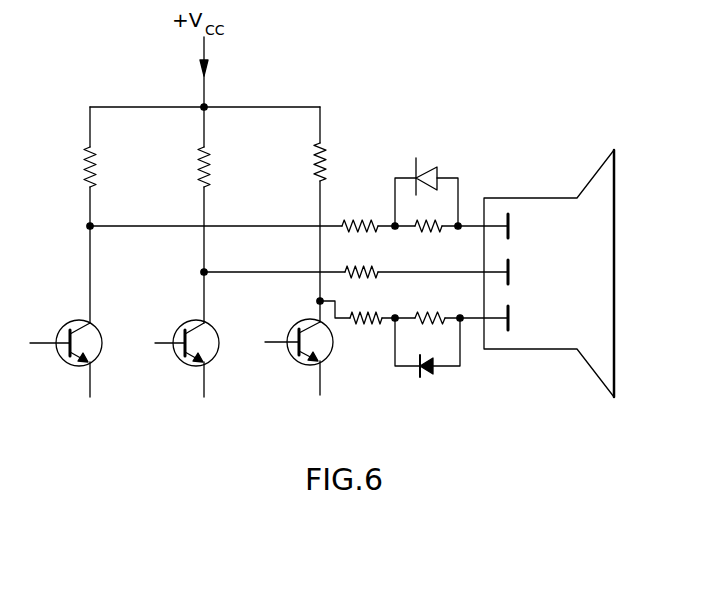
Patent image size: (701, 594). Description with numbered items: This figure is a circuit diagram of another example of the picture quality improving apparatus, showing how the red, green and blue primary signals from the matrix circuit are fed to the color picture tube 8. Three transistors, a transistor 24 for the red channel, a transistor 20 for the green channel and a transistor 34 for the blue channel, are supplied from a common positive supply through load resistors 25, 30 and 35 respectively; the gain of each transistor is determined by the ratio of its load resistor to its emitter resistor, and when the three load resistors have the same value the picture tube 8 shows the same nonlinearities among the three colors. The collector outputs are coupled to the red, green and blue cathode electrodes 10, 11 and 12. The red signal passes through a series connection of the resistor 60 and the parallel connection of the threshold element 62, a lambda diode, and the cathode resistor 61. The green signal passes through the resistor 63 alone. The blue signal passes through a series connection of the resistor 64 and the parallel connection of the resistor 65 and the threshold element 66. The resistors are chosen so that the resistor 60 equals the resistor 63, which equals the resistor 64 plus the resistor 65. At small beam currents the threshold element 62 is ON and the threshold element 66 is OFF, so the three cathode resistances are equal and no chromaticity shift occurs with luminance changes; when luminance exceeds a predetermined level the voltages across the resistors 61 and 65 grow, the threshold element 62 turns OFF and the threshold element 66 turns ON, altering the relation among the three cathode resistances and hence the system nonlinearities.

The color picture tube 8 is at (578, 194).
The cathode electrode 10 is at (510, 230).
The cathode electrode 11 is at (510, 276).
The cathode electrode 12 is at (510, 323).
The transistor 20 is at (212, 350).
The transistor 24 is at (96, 350).
The load resistor 25 is at (98, 162).
The resistor 30 is at (212, 162).
The transistor 34 is at (326, 350).
The resistor 35 is at (327, 153).
The resistor 60 is at (366, 218).
The cathode resistor 61 is at (432, 234).
The threshold element 62 is at (430, 172).
The resistor 63 is at (368, 268).
The resistor 64 is at (358, 326).
The cathode resistor 65 is at (428, 310).
The threshold element 66 is at (434, 372).